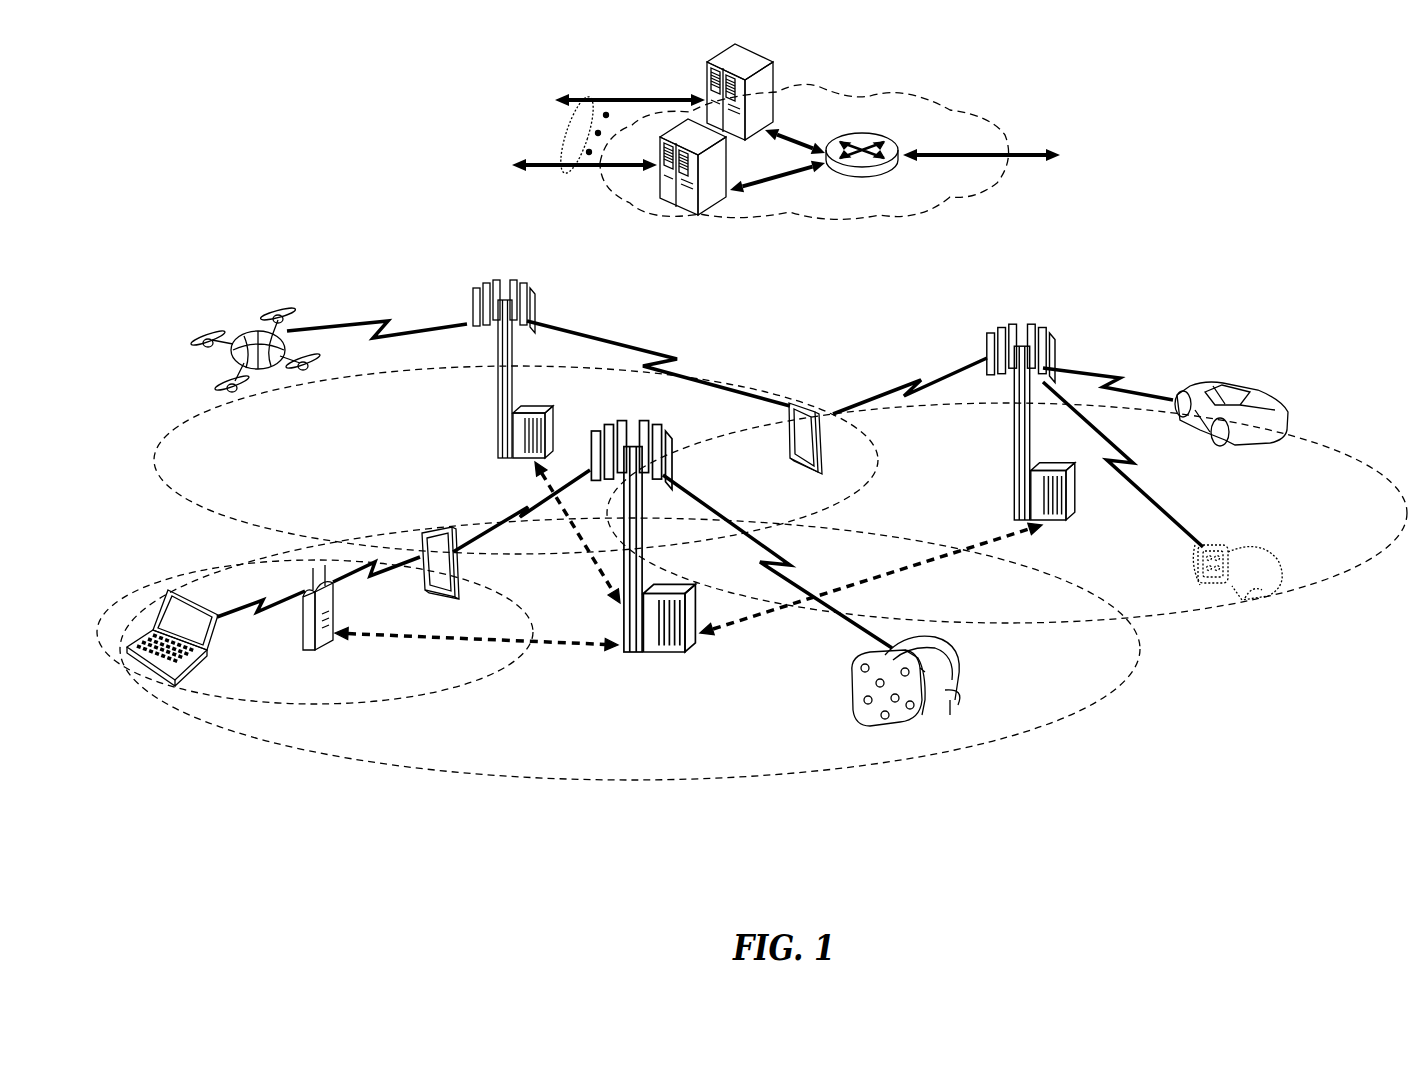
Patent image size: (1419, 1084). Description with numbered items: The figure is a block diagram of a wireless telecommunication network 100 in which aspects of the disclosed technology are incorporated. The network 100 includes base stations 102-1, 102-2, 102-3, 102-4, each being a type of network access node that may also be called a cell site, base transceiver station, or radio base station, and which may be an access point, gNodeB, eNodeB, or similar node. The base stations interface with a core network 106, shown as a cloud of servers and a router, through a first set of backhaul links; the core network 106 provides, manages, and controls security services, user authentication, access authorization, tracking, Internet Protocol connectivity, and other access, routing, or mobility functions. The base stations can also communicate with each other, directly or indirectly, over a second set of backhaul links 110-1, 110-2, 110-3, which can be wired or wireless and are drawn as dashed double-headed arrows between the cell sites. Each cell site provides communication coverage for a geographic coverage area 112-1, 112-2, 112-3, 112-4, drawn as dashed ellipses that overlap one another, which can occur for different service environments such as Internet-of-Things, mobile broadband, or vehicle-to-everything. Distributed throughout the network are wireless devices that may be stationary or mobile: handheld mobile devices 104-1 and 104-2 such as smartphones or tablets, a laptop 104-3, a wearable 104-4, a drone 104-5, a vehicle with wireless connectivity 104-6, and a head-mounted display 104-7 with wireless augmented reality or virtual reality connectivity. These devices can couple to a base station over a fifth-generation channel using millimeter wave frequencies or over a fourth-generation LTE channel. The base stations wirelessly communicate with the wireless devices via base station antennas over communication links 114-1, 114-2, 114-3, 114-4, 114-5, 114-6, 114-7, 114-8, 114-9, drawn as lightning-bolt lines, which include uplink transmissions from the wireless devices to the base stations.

The wireless telecommunication network 100 is at (1312, 138).
The core network 106 is at (893, 220).
The base station 102-1 is at (630, 655).
The base station 102-2 is at (497, 405).
The base station 102-3 is at (1013, 440).
The base station 102-4 is at (303, 628).
The handheld mobile device 104-1 is at (458, 590).
The handheld mobile device 104-2 is at (785, 445).
The laptop 104-3 is at (148, 668).
The wearable 104-4 is at (1225, 545).
The drone 104-5 is at (265, 367).
The vehicle with wireless connectivity 104-6 is at (1250, 395).
The head-mounted display 104-7 is at (960, 660).
The backhaul link 110-1 is at (375, 638).
The backhaul link 110-2 is at (930, 565).
The backhaul link 110-3 is at (585, 562).
The geographic coverage area 112-1 is at (560, 785).
The geographic coverage area 112-2 is at (440, 690).
The geographic coverage area 112-3 is at (212, 520).
The geographic coverage area 112-4 is at (1315, 438).
The communication link 114-1 is at (835, 550).
The communication link 114-2 is at (520, 507).
The communication link 114-3 is at (232, 612).
The communication link 114-4 is at (378, 578).
The communication link 114-5 is at (385, 327).
The communication link 114-6 is at (700, 337).
The communication link 114-7 is at (905, 385).
The communication link 114-8 is at (1185, 470).
The communication link 114-9 is at (1110, 378).